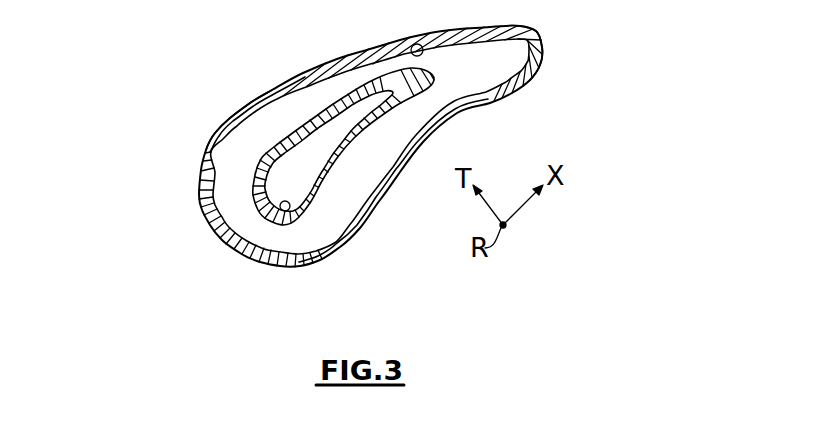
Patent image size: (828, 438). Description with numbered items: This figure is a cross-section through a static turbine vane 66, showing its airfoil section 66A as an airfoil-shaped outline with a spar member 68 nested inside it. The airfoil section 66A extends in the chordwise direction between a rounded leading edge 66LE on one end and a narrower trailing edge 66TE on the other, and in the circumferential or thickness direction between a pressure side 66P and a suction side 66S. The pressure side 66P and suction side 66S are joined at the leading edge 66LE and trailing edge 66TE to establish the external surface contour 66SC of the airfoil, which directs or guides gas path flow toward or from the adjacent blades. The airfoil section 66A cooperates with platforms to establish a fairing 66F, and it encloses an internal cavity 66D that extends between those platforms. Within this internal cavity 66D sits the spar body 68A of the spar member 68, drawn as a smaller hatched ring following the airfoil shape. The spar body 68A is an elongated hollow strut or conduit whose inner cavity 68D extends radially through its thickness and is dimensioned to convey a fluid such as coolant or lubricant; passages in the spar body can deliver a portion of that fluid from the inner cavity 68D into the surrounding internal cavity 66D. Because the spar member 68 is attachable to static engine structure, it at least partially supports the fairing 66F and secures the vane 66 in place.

The vane 66 is at (160, 50).
The airfoil section 66A is at (258, 88).
The suction side 66S is at (288, 70).
The pressure side 66P is at (378, 205).
The leading edge 66LE is at (227, 259).
The trailing edge 66TE is at (543, 48).
The fairing 66F is at (226, 121).
The external surface contour 66SC is at (200, 208).
The internal cavity 66D is at (423, 45).
The spar member 68 is at (347, 90).
The spar body 68A is at (253, 180).
The inner cavity 68D is at (288, 211).